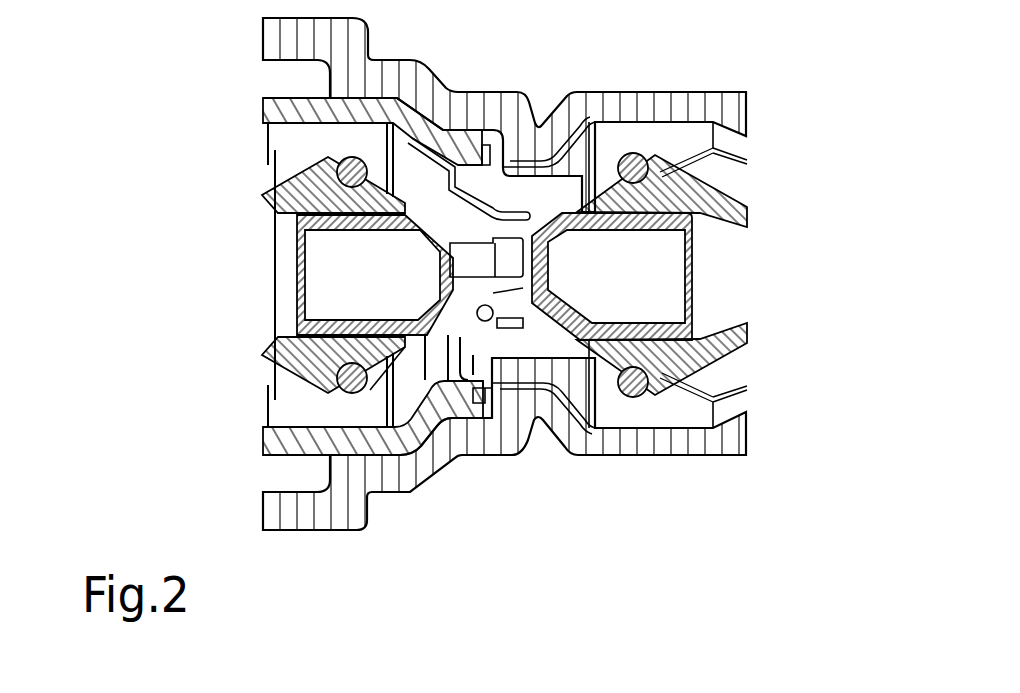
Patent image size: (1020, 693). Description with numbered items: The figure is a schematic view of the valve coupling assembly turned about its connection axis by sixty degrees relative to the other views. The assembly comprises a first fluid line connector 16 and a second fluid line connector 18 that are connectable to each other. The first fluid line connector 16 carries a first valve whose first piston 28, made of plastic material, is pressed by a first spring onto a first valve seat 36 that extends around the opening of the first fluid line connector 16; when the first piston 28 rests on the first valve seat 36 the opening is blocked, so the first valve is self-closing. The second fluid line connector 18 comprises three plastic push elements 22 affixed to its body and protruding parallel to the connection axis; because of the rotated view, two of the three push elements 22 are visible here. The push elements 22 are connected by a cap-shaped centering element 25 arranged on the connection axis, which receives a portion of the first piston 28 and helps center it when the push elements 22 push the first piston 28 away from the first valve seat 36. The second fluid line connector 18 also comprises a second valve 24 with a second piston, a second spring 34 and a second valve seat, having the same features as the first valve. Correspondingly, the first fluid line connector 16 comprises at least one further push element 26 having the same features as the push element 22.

The first fluid line connector 16 is at (678, 440).
The second fluid line connector 18 is at (290, 437).
The push element 22 is at (527, 197).
The second valve 24 is at (298, 347).
The centering element 25 is at (498, 320).
The further push element 26 is at (472, 263).
The first piston 28 is at (678, 370).
The second spring 34 is at (379, 395).
The first valve seat 36 is at (578, 392).